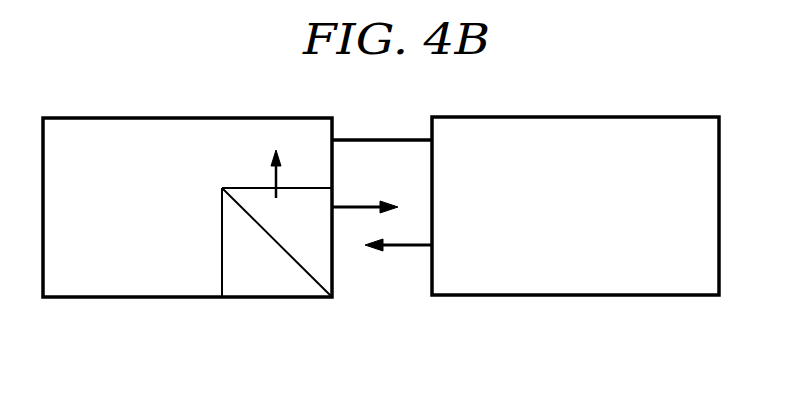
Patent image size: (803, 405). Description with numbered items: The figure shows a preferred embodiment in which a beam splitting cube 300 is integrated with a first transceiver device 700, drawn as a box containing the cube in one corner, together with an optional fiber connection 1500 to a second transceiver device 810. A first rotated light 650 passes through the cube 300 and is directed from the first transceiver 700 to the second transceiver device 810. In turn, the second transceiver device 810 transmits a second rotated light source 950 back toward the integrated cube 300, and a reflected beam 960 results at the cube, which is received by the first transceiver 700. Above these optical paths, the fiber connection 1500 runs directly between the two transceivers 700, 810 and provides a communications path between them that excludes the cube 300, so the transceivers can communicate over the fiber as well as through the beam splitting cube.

The first transceiver device 700 is at (73, 285).
The beam splitting cube 300 is at (272, 285).
The reflected beam 960 is at (270, 173).
The second transceiver device 810 is at (633, 282).
The fiber connection 1500 is at (382, 140).
The first rotated light 650 is at (360, 207).
The second rotated light source 950 is at (405, 245).